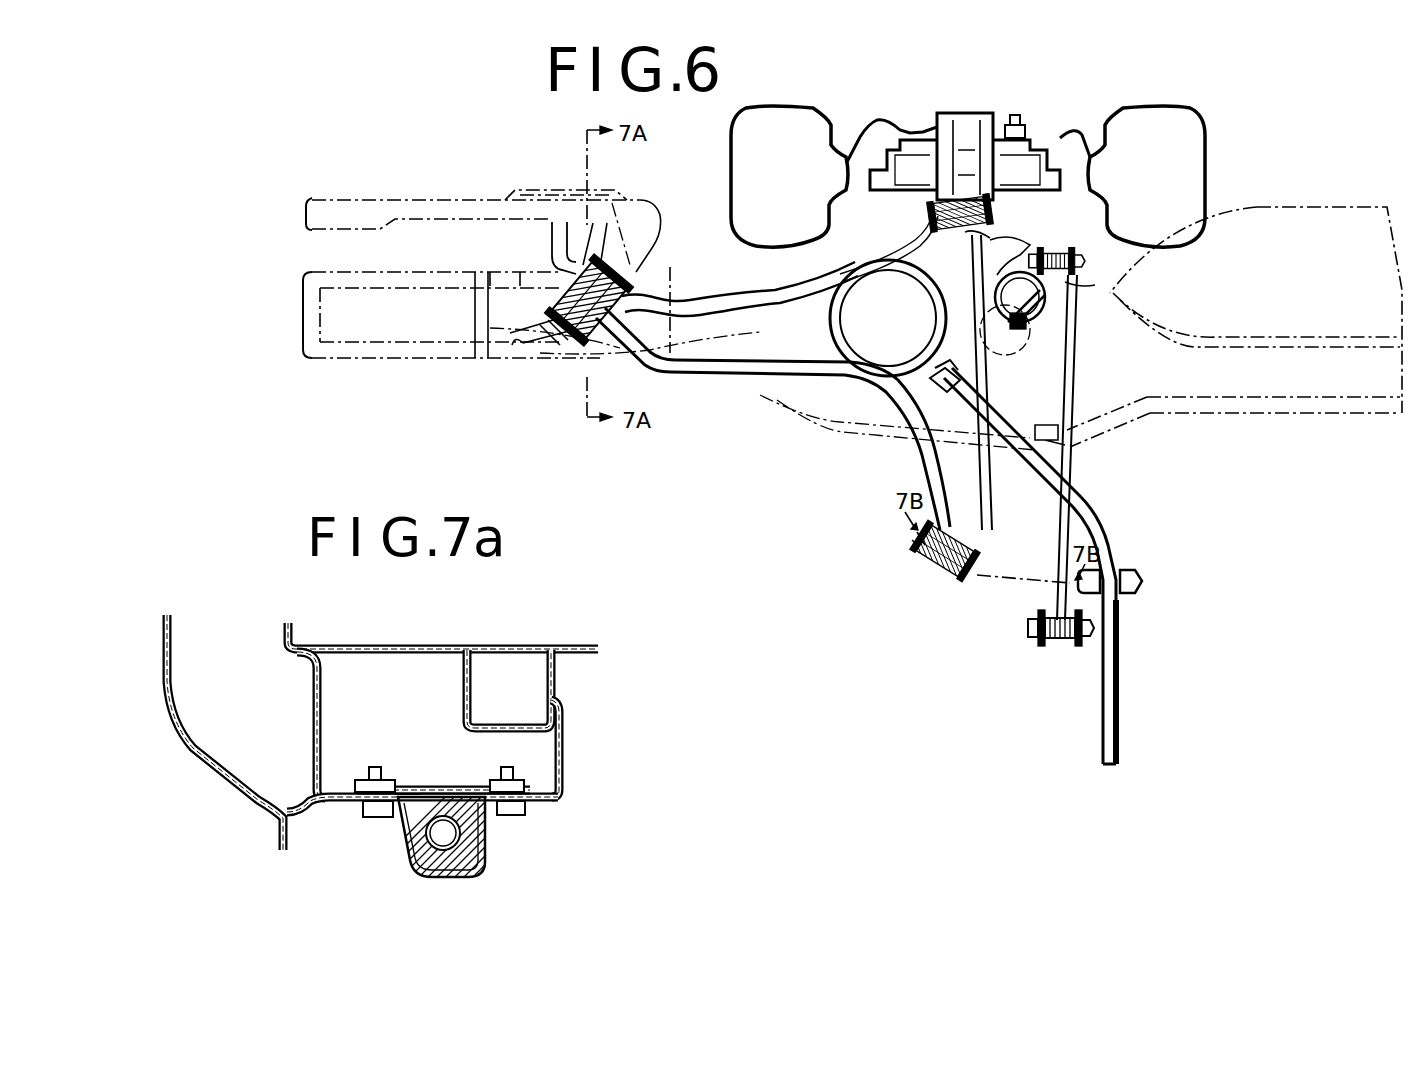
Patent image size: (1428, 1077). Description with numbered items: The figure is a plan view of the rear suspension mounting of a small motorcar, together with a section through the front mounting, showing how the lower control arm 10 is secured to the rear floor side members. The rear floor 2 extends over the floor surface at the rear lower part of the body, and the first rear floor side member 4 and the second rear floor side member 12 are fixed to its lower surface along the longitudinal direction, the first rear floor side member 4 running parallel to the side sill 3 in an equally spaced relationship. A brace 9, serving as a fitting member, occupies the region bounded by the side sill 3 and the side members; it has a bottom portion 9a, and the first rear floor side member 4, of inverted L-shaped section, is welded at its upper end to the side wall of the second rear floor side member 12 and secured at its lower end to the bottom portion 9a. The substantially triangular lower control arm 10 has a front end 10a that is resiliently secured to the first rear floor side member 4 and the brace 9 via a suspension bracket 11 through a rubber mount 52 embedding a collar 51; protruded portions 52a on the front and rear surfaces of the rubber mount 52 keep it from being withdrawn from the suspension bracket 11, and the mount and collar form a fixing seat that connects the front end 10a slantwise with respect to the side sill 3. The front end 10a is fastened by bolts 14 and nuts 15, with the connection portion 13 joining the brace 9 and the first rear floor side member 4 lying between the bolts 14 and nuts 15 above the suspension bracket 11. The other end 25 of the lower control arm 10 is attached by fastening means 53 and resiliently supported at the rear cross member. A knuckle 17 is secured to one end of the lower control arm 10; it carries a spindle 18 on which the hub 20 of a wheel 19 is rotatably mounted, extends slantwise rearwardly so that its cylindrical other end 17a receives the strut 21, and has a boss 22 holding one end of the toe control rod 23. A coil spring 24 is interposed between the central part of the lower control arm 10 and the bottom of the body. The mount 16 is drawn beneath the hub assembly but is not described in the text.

In FIG. 7a, the rear floor 2 is at (420, 642).
In FIG. 6, the side sill 3 is at (452, 205).
In FIG. 7a, the side sill 3 is at (322, 695).
In FIG. 6, the first rear floor side member 4 is at (462, 330).
In FIG. 7a, the first rear floor side member 4 is at (565, 765).
In FIG. 7a, the brace 9 is at (333, 803).
In FIG. 7a, the bottom portion 9a is at (415, 790).
In FIG. 6, the lower control arm 10 is at (765, 380).
In FIG. 6, the front end of the lower control arm 10a is at (640, 300).
In FIG. 6, the suspension bracket 11 is at (550, 335).
In FIG. 7a, the suspension bracket 11 is at (487, 845).
In FIG. 6, the second rear floor side member 12 is at (795, 397).
In FIG. 7a, the second rear floor side member 12 is at (556, 672).
In FIG. 7a, the connection portion 13 is at (447, 790).
In FIG. 7a, the bolts 14 is at (378, 816).
In FIG. 7a, the nuts 15 is at (370, 775).
In FIG. 6, the differential mount 16 is at (935, 213).
In FIG. 6, the knuckle 17 is at (1008, 245).
In FIG. 6, the other end of the knuckle 17a is at (1085, 284).
In FIG. 6, the spindle 18 is at (975, 140).
In FIG. 6, the wheel 19 is at (1088, 140).
In FIG. 6, the hub 20 is at (935, 135).
In FIG. 6, the strut 21 is at (1030, 305).
In FIG. 6, the boss 22 is at (1028, 242).
In FIG. 6, the toe control rod 23 is at (1070, 425).
In FIG. 6, the coil spring 24 is at (878, 355).
In FIG. 6, the other end of the lower control arm 25 is at (938, 565).
In FIG. 6, the collar 51 is at (597, 268).
In FIG. 7a, the collar 51 is at (470, 875).
In FIG. 6, the rubber mount 52 is at (625, 285).
In FIG. 7a, the rubber mount 52 is at (412, 865).
In FIG. 6, the protruded portions 52a is at (530, 333).
In FIG. 6, the fastening means 53 is at (914, 548).